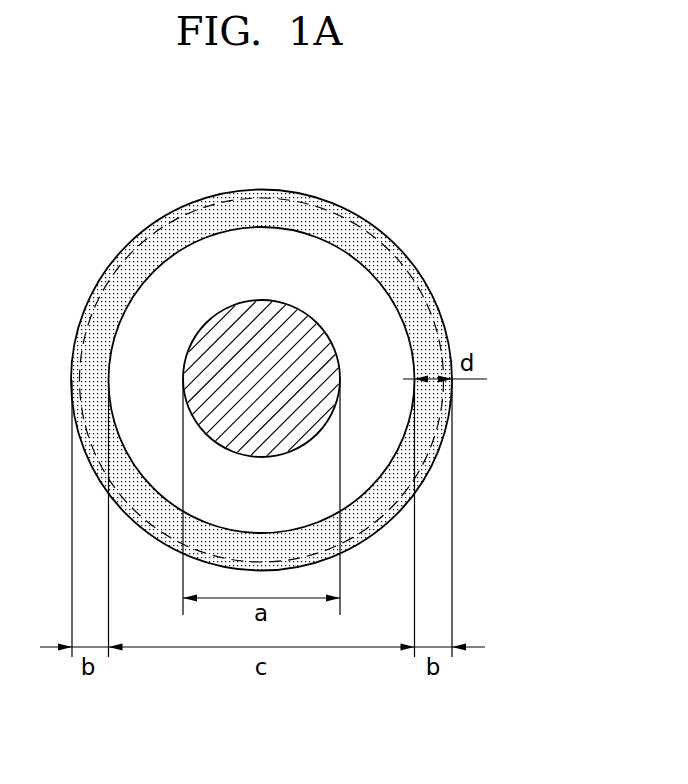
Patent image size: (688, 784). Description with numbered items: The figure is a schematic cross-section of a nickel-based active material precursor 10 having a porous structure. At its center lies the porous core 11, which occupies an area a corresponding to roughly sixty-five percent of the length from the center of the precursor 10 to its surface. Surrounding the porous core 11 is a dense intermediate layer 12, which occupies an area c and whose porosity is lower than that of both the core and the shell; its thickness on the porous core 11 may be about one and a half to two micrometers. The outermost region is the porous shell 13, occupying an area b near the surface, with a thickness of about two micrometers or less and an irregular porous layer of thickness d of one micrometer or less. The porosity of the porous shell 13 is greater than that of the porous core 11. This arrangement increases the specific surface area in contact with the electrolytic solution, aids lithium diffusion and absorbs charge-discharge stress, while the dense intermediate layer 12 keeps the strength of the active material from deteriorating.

The nickel-based active material precursor 10 is at (496, 186).
The porous core 11 is at (318, 348).
The dense intermediate layer 12 is at (318, 253).
The porous shell 13 is at (262, 193).